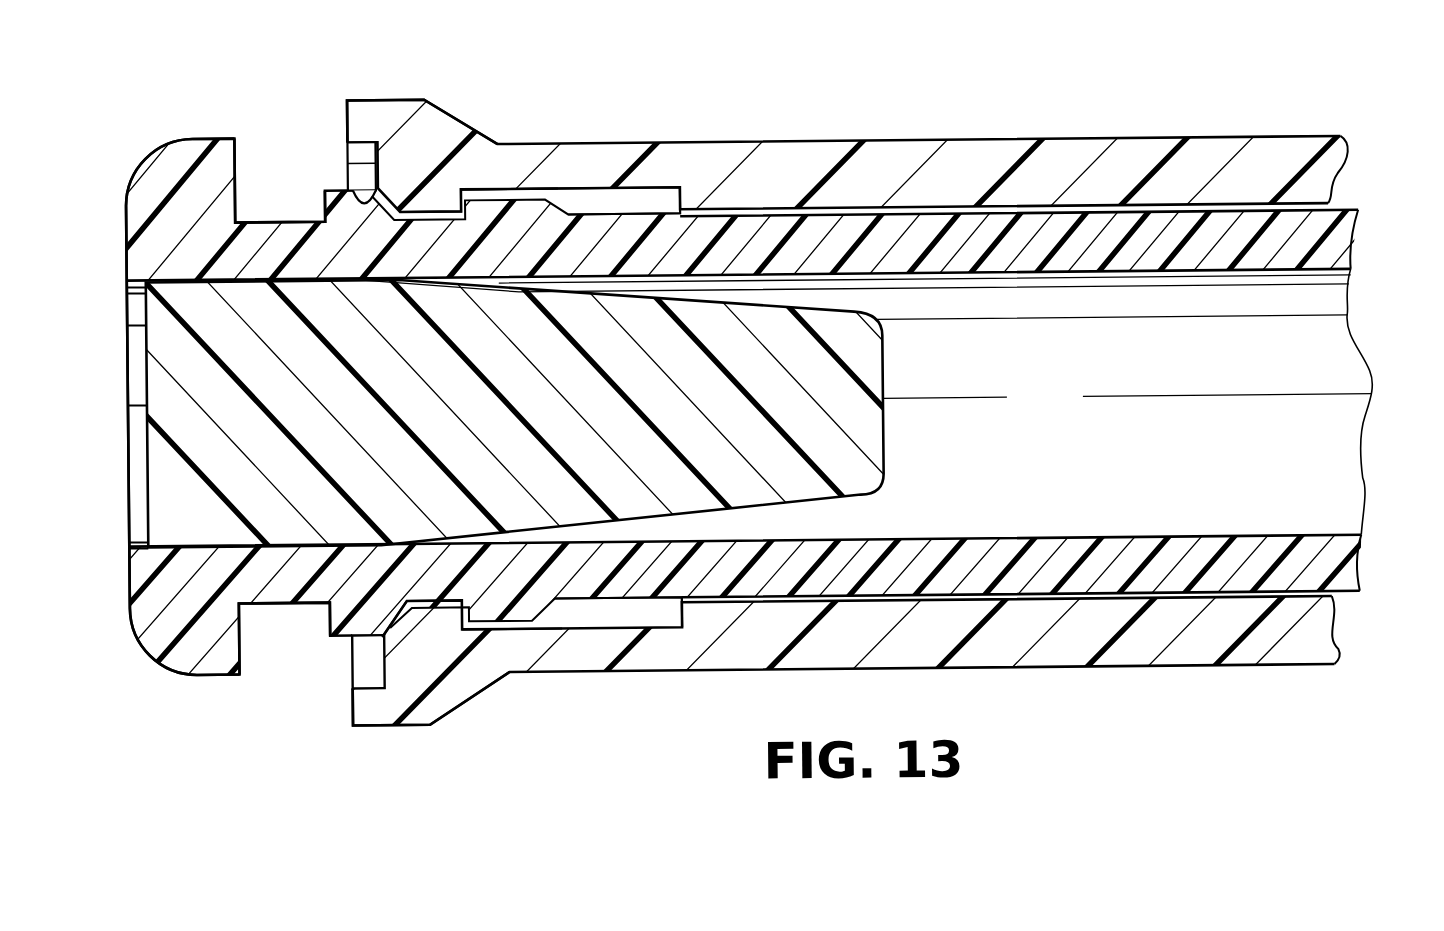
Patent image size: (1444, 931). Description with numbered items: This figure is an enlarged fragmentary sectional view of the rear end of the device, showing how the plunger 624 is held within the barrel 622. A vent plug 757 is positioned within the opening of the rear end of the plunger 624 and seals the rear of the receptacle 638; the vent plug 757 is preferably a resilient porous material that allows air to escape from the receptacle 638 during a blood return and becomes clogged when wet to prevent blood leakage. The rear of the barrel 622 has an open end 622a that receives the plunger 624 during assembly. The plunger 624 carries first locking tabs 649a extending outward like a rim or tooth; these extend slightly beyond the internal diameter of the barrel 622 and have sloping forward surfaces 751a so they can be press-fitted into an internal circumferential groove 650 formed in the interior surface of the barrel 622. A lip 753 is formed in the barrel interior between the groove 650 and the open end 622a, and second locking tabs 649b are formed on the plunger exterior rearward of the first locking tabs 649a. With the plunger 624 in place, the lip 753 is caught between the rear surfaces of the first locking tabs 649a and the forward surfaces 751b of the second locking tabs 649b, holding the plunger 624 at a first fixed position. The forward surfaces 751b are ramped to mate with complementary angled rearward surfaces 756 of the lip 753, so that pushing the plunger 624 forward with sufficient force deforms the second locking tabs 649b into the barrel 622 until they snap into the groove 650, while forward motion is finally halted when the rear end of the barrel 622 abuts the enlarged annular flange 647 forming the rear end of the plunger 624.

The barrel 622 is at (957, 146).
The open end 622a is at (347, 680).
The plunger 624 is at (1015, 286).
The receptacle 638 is at (1357, 389).
The enlarged annular flange 647 is at (208, 673).
The first locking tabs 649a is at (526, 189).
The second locking tabs 649b is at (340, 190).
The internal circumferential groove 650 is at (640, 208).
The sloping forward surfaces 751a is at (563, 191).
The forward surfaces 751b is at (397, 617).
The lip 753 is at (393, 182).
The angled rearward surfaces 756 is at (361, 140).
The vent plug 757 is at (883, 383).